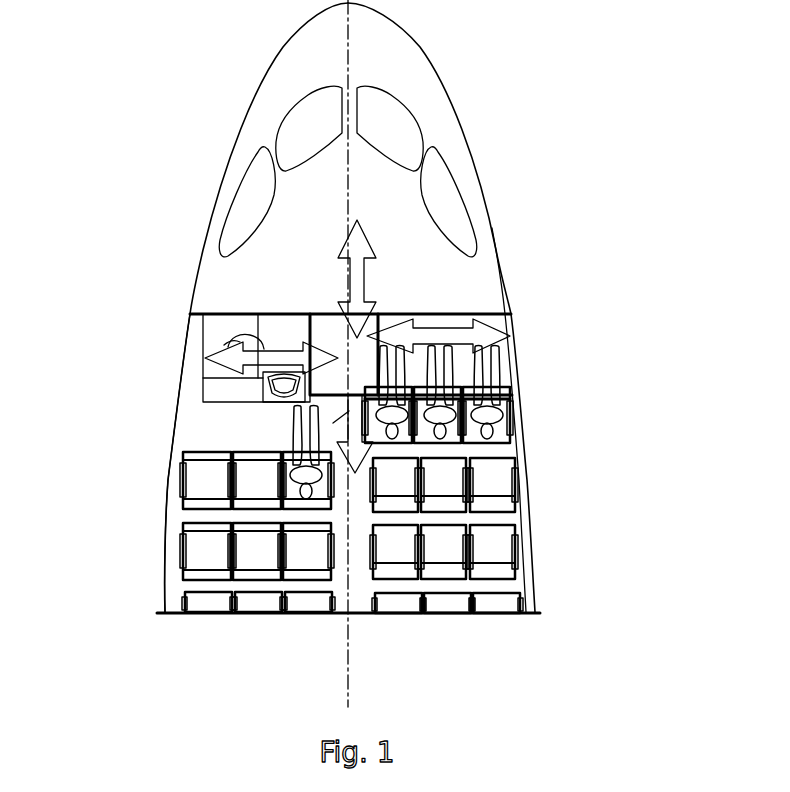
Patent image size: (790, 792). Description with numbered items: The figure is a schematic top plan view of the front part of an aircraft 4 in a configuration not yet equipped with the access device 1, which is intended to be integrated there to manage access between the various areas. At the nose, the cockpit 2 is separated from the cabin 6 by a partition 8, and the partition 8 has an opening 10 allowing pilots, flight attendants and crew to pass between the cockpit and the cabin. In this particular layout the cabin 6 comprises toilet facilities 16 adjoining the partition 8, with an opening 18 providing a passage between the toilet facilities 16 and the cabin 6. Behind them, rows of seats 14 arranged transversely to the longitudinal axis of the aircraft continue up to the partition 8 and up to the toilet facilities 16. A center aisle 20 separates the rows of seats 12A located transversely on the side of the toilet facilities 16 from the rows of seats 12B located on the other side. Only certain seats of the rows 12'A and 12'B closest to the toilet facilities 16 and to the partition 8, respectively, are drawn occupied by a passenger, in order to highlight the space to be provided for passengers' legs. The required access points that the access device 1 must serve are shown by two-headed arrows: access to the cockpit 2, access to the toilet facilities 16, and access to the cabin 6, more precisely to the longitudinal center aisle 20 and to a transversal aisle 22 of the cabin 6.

The access device 1 is at (380, 336).
The cockpit 2 is at (420, 257).
The aircraft 4 is at (490, 122).
The cabin 6 is at (190, 412).
The partition 8 is at (385, 334).
The opening 10 is at (345, 323).
The rows of seats 12A is at (302, 567).
The rows of seats 12B is at (498, 572).
The row of seats 12'A is at (172, 472).
The row of seats 12'B is at (512, 395).
The seats 14 is at (298, 547).
The toilet facilities 16 is at (217, 327).
The opening 18 is at (242, 378).
The center aisle 20 is at (362, 587).
The transversal aisle 22 is at (450, 340).